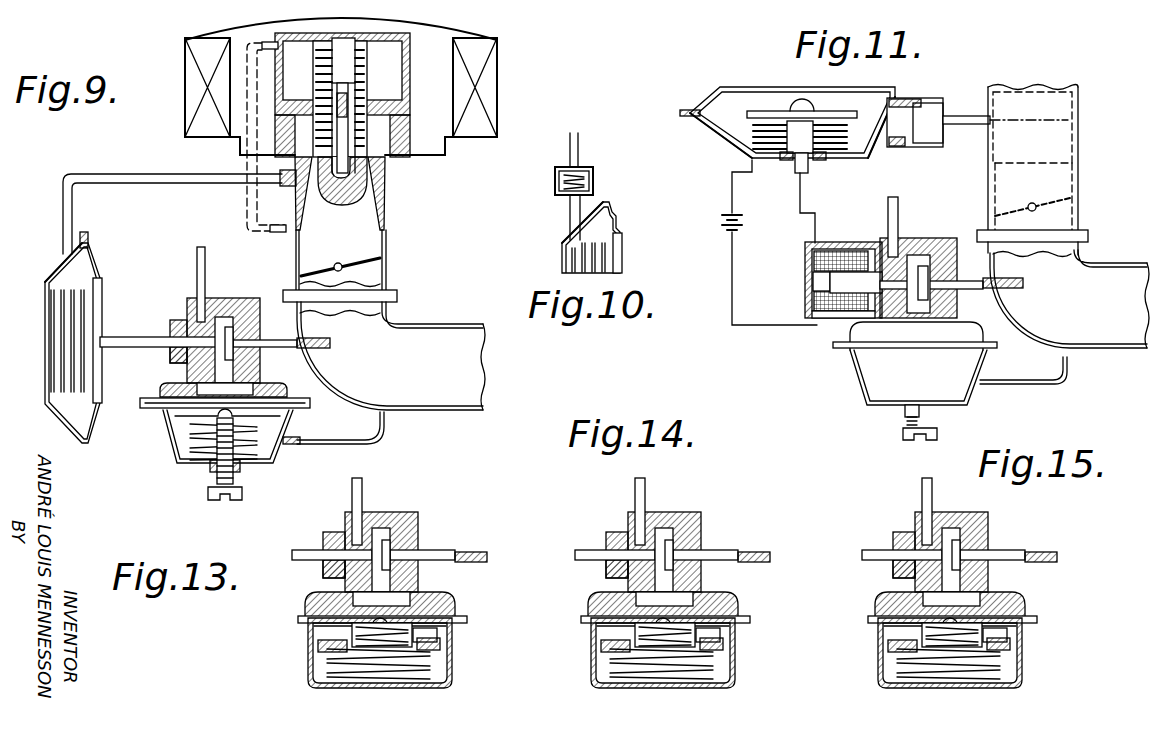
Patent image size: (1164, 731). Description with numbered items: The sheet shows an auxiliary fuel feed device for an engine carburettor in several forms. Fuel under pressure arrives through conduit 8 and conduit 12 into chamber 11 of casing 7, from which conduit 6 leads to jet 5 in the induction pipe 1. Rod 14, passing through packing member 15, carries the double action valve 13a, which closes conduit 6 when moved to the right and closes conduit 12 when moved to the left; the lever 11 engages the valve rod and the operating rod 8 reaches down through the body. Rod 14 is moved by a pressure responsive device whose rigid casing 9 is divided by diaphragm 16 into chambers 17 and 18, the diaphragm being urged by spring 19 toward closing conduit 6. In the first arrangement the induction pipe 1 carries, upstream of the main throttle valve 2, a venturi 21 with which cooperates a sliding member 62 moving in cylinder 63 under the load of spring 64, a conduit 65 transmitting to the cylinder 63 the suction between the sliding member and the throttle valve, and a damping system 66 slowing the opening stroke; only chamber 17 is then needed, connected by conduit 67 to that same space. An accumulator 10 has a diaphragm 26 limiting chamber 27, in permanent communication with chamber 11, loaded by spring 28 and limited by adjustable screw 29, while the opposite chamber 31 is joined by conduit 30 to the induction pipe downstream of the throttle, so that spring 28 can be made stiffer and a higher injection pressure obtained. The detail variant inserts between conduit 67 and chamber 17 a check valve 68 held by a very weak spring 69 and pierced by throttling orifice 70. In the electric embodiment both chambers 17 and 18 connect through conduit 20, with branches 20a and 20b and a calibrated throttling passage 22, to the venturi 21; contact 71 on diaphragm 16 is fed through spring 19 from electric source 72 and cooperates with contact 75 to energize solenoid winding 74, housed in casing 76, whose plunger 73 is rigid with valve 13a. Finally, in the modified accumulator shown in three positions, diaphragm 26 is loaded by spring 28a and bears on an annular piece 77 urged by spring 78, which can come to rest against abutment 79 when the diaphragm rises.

In FIG. 9, the induction pipe 1 is at (448, 336).
In FIG. 11, the induction pipe 1 is at (1085, 336).
In FIG. 9, the main throttle valve 2 is at (341, 263).
In FIG. 11, the main throttle valve 2 is at (1026, 206).
In FIG. 9, the jet 5 is at (331, 343).
In FIG. 11, the jet 5 is at (1025, 283).
In FIG. 13, the jet 5 is at (478, 552).
In FIG. 14, the jet 5 is at (758, 545).
In FIG. 15, the jet 5 is at (1049, 543).
In FIG. 9, the conduit 6 is at (272, 347).
In FIG. 11, the conduit 6 is at (968, 282).
In FIG. 13, the conduit 6 is at (440, 552).
In FIG. 14, the conduit 6 is at (706, 544).
In FIG. 15, the conduit 6 is at (992, 542).
In FIG. 9, the casing 7 is at (232, 300).
In FIG. 11, the casing 7 is at (945, 240).
In FIG. 13, the casing 7 is at (410, 516).
In FIG. 14, the casing 7 is at (670, 540).
In FIG. 15, the casing 7 is at (951, 538).
In FIG. 9, the conduit 8 is at (206, 270).
In FIG. 11, the conduit 8 is at (889, 216).
In FIG. 13, the conduit 8 is at (360, 488).
In FIG. 14, the conduit 8 is at (650, 504).
In FIG. 15, the conduit 8 is at (916, 505).
In FIG. 9, the rigid casing 9 is at (60, 426).
In FIG. 10, the rigid casing 9 is at (562, 266).
In FIG. 11, the rigid casing 9 is at (728, 95).
In FIG. 9, the accumulator 10 is at (172, 455).
In FIG. 11, the accumulator 10 is at (862, 390).
In FIG. 13, the accumulator 10 is at (310, 660).
In FIG. 14, the accumulator 10 is at (650, 653).
In FIG. 15, the accumulator 10 is at (935, 653).
In FIG. 9, the chamber 11 is at (216, 320).
In FIG. 11, the chamber 11 is at (915, 258).
In FIG. 13, the chamber 11 is at (381, 530).
In FIG. 14, the chamber 11 is at (673, 540).
In FIG. 15, the chamber 11 is at (981, 541).
In FIG. 9, the conduit 12 is at (185, 352).
In FIG. 11, the conduit 12 is at (845, 318).
In FIG. 13, the conduit 12 is at (336, 565).
In FIG. 14, the conduit 12 is at (601, 572).
In FIG. 15, the conduit 12 is at (889, 573).
In FIG. 9, the double action valve 13a is at (250, 302).
In FIG. 11, the double action valve 13a is at (930, 290).
In FIG. 13, the double action valve 13a is at (388, 562).
In FIG. 14, the double action valve 13a is at (718, 563).
In FIG. 15, the double action valve 13a is at (998, 563).
In FIG. 9, the rod 14 is at (146, 340).
In FIG. 13, the rod 14 is at (310, 552).
In FIG. 14, the rod 14 is at (615, 543).
In FIG. 15, the rod 14 is at (902, 541).
In FIG. 9, the packing member 15 is at (176, 322).
In FIG. 13, the packing member 15 is at (338, 538).
In FIG. 14, the packing member 15 is at (615, 540).
In FIG. 15, the packing member 15 is at (899, 540).
In FIG. 9, the diaphragm 16 is at (101, 282).
In FIG. 10, the diaphragm 16 is at (622, 235).
In FIG. 11, the diaphragm 16 is at (718, 122).
In FIG. 9, the chamber 17 is at (58, 278).
In FIG. 10, the chamber 17 is at (580, 236).
In FIG. 11, the chamber 17 is at (866, 152).
In FIG. 11, the chamber 18 is at (820, 106).
In FIG. 9, the spring 19 is at (55, 326).
In FIG. 10, the spring 19 is at (626, 266).
In FIG. 11, the spring 19 is at (750, 148).
In FIG. 11, the conduit 20 is at (959, 124).
In FIG. 11, the branch 20a is at (896, 146).
In FIG. 11, the branch 20b is at (900, 100).
In FIG. 9, the venturi 21 is at (385, 182).
In FIG. 11, the venturi 21 is at (1073, 122).
In FIG. 11, the calibrated throttling passage 22 is at (915, 102).
In FIG. 9, the diaphragm 26 is at (182, 418).
In FIG. 13, the diaphragm 26 is at (442, 629).
In FIG. 14, the diaphragm 26 is at (691, 633).
In FIG. 15, the diaphragm 26 is at (974, 636).
In FIG. 9, the chamber 27 is at (276, 401).
In FIG. 13, the chamber 27 is at (437, 612).
In FIG. 14, the chamber 27 is at (683, 602).
In FIG. 15, the chamber 27 is at (967, 602).
In FIG. 9, the spring 28 is at (258, 466).
In FIG. 13, the spring 28a is at (340, 622).
In FIG. 14, the spring 28a is at (657, 605).
In FIG. 15, the spring 28a is at (942, 606).
In FIG. 9, the screw 29 is at (216, 485).
In FIG. 11, the screw 29 is at (903, 422).
In FIG. 9, the conduit 30 is at (374, 430).
In FIG. 11, the conduit 30 is at (1033, 383).
In FIG. 9, the chamber 31 is at (288, 445).
In FIG. 9, the sliding member 62 is at (338, 196).
In FIG. 9, the cylinder 63 is at (400, 80).
In FIG. 9, the spring 64 is at (352, 78).
In FIG. 9, the conduit 65 is at (247, 203).
In FIG. 9, the damping system 66 is at (336, 104).
In FIG. 9, the conduit 67 is at (178, 176).
In FIG. 10, the conduit 67 is at (578, 146).
In FIG. 10, the check valve 68 is at (557, 181).
In FIG. 10, the spring 69 is at (570, 172).
In FIG. 10, the throttling orifice 70 is at (571, 206).
In FIG. 11, the electric contact 71 is at (794, 122).
In FIG. 11, the electric source 72 is at (738, 215).
In FIG. 11, the core or plunger 73 is at (845, 284).
In FIG. 11, the solenoid winding 74 is at (855, 242).
In FIG. 11, the contact 75 is at (806, 168).
In FIG. 11, the casing 76 is at (812, 280).
In FIG. 13, the annular piece 77 is at (440, 648).
In FIG. 14, the annular piece 77 is at (709, 646).
In FIG. 15, the annular piece 77 is at (996, 646).
In FIG. 13, the spring 78 is at (340, 670).
In FIG. 14, the spring 78 is at (639, 668).
In FIG. 15, the spring 78 is at (978, 668).
In FIG. 13, the abutment 79 is at (320, 642).
In FIG. 14, the abutment 79 is at (639, 635).
In FIG. 15, the abutment 79 is at (926, 636).